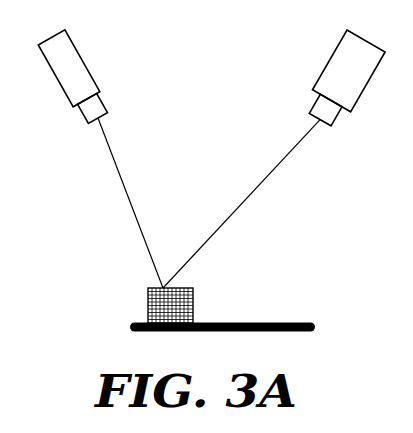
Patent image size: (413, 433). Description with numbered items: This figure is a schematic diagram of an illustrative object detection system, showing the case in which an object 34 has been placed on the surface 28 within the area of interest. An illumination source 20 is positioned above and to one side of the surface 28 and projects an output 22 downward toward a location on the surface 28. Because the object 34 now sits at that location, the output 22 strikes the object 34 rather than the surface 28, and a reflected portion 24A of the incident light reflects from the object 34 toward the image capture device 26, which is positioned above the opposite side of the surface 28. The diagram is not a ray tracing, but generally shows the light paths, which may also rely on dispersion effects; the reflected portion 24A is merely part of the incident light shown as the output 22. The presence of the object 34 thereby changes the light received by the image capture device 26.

The illumination source 20 is at (88, 82).
The output 22 is at (120, 187).
The reflected portion 24A is at (257, 194).
The image capture device 26 is at (321, 77).
The surface 28 is at (287, 331).
The object 34 is at (150, 293).